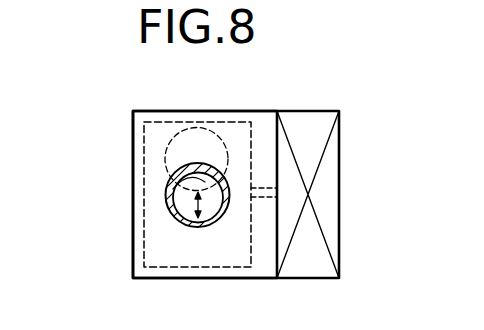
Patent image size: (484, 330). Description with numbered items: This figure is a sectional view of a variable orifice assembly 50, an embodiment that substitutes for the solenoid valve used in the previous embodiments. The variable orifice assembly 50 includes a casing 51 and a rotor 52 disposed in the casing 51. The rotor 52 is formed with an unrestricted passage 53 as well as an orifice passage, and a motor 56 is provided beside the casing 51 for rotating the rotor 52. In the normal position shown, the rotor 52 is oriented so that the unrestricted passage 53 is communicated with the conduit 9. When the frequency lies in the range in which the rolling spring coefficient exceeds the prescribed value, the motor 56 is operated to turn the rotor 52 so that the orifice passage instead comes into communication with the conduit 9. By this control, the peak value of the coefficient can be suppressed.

The variable orifice assembly 50 is at (264, 111).
The casing 51 is at (145, 279).
The rotor 52 is at (142, 228).
The unrestricted passage 53 is at (205, 182).
The conduit 9 is at (170, 193).
The motor 56 is at (340, 173).